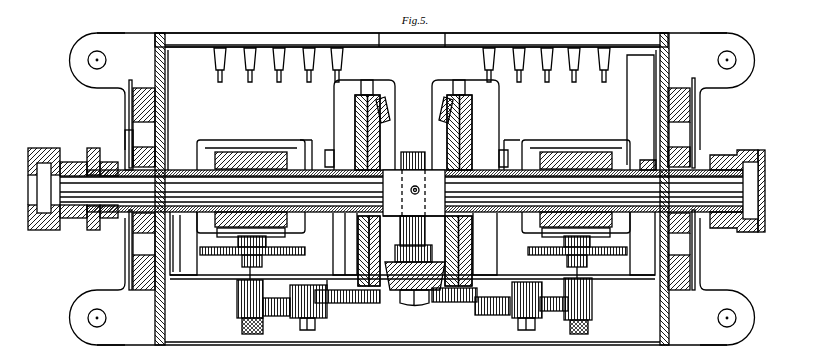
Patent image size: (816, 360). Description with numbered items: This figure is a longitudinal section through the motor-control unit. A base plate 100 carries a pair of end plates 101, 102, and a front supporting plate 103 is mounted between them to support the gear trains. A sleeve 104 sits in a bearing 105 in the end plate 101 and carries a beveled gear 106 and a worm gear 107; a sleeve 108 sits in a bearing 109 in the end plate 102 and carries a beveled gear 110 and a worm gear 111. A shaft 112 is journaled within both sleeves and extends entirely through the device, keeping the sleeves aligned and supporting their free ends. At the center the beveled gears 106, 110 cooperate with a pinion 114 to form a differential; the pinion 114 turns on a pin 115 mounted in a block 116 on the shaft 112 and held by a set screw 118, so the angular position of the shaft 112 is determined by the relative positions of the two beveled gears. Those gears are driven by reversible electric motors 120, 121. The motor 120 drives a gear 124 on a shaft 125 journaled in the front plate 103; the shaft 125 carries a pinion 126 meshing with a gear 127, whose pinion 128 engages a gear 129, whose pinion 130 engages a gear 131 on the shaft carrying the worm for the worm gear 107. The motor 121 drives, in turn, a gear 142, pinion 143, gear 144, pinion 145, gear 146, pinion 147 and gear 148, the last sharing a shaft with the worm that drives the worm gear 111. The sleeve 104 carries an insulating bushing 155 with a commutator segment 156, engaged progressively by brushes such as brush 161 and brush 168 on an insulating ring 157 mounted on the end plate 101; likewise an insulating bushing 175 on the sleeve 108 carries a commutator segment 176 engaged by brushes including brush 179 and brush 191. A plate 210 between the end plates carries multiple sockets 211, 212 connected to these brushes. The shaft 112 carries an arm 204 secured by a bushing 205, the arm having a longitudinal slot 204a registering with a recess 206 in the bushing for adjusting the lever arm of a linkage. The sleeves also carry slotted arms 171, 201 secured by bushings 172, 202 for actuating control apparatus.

The base plate 100 is at (446, 340).
The end plate 101 is at (165, 333).
The end plate 102 is at (669, 333).
The front supporting plate 103 is at (213, 279).
The sleeve 104 is at (313, 170).
The bearing 105 is at (179, 214).
The beveled gear 106 is at (388, 110).
The worm gear 107 is at (355, 99).
The sleeve 108 is at (507, 170).
The bearing 109 is at (650, 160).
The beveled gear 110 is at (446, 118).
The worm gear 111 is at (470, 121).
The shaft 112 is at (175, 177).
The pinion 114 is at (425, 292).
The pin 115 is at (414, 152).
The block 116 is at (425, 193).
The set screw 118 is at (410, 189).
The reversible electric motor 120 is at (247, 148).
The reversible electric motor 121 is at (572, 148).
The gear 124 is at (281, 255).
The shaft 125 is at (243, 268).
The pinion 126 is at (243, 313).
The gear 127 is at (356, 303).
The pinion 128 is at (312, 306).
The gear 129 is at (285, 316).
The pinion 130 is at (327, 288).
The gear 131 is at (380, 300).
The gear 142 is at (606, 255).
The pinion 143 is at (592, 316).
The gear 144 is at (525, 320).
The pinion 145 is at (546, 312).
The gear 146 is at (488, 315).
The pinion 147 is at (556, 290).
The gear 148 is at (456, 300).
The insulating bushing 155 is at (157, 149).
The commutator segment 156 is at (127, 146).
The insulating ring 157 is at (143, 88).
The brush 161 is at (129, 107).
The brush 168 is at (133, 268).
The slotted arm 171 is at (93, 233).
The bushing 172 is at (116, 224).
The insulating bushing 175 is at (682, 150).
The commutator segment 176 is at (692, 236).
The brush 179 is at (697, 278).
The brush 191 is at (696, 112).
The slotted arm 201 is at (759, 172).
The bushing 202 is at (755, 152).
The arm 204 is at (34, 230).
The longitudinal slot 204a is at (30, 160).
The bushing 205 is at (70, 160).
The recess 206 is at (48, 214).
The plate 210 is at (411, 48).
The multiple socket 211 is at (259, 50).
The multiple socket 212 is at (546, 50).